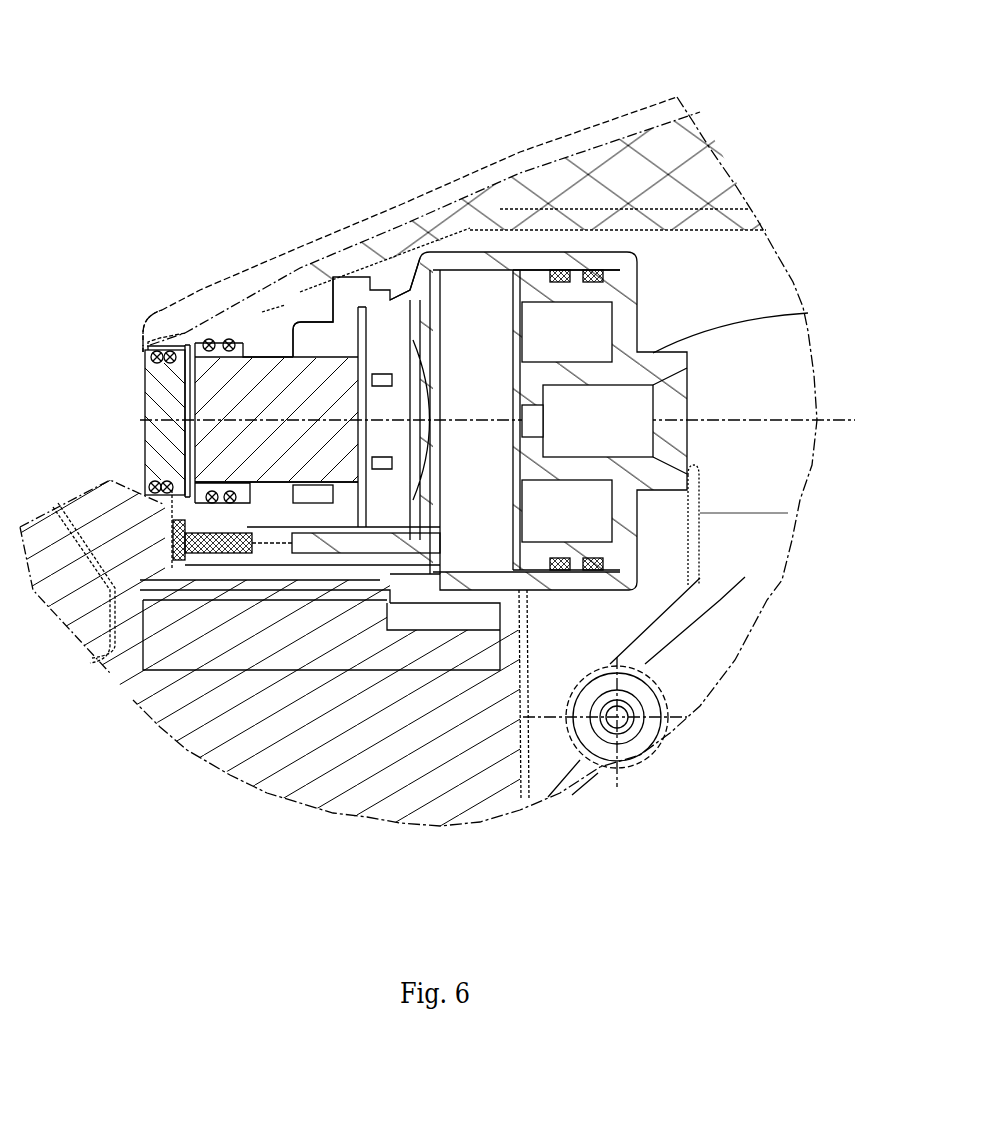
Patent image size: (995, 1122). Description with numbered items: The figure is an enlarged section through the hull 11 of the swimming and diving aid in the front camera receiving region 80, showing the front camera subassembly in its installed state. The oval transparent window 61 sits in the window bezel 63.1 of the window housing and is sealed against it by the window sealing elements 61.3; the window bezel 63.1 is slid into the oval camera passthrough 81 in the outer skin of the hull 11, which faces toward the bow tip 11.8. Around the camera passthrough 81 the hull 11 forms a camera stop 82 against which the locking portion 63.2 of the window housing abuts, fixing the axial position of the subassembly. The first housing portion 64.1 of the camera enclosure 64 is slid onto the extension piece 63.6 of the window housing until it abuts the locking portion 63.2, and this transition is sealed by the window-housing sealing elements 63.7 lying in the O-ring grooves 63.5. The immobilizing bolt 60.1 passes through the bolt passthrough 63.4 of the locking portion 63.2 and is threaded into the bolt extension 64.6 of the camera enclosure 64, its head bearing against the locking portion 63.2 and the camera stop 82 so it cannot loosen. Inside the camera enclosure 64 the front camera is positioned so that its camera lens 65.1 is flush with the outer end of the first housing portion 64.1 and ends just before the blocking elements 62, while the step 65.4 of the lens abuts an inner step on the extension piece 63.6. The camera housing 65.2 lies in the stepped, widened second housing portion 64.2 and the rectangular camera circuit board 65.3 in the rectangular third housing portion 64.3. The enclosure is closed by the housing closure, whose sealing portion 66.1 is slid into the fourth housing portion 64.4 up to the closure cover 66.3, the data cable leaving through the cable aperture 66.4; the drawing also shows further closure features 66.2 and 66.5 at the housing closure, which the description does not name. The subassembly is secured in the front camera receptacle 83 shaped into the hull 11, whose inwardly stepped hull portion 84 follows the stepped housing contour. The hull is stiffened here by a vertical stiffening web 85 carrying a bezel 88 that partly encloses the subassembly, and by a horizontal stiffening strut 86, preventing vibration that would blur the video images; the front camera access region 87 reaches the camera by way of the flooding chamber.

The front camera receiving region 80 is at (131, 124).
The hull 11 is at (630, 127).
The bow tip 11.8 is at (53, 587).
The transparent window 61 is at (155, 387).
The window sealing elements 61.3 is at (147, 353).
The blocking elements 62 is at (186, 343).
The window bezel 63.1 is at (160, 343).
The locking portion 63.2 is at (180, 342).
The bolt passthrough 63.4 is at (187, 517).
The O-ring grooves 63.5 is at (205, 493).
The extension piece 63.6 is at (220, 483).
The window-housing sealing elements 63.7 is at (229, 340).
The camera enclosure 64 is at (453, 260).
The first housing portion 64.1 is at (253, 337).
The second housing portion 64.2 is at (312, 308).
The third housing portion 64.3 is at (387, 297).
The fourth housing portion 64.4 is at (480, 262).
The bolt extension 64.6 is at (245, 558).
The camera lens 65.1 is at (253, 407).
The camera housing 65.2 is at (312, 502).
The camera circuit board 65.3 is at (362, 480).
The step 65.4 is at (235, 478).
The sealing portion 66.1 is at (537, 565).
The lower connector seal 66.2 is at (603, 565).
The closure cover 66.3 is at (627, 320).
The cable aperture 66.4 is at (618, 435).
The upper connector seal 66.5 is at (592, 265).
The camera passthrough 81 is at (147, 342).
The camera stop 82 is at (162, 517).
The front camera receptacle 83 is at (268, 310).
The inwardly stepped hull portion 84 is at (358, 235).
The stiffening web 85 is at (423, 770).
The stiffening strut 86 is at (748, 213).
The front camera access region 87 is at (758, 362).
The bezel 88 is at (383, 605).
The immobilizing bolt 60.1 is at (228, 540).